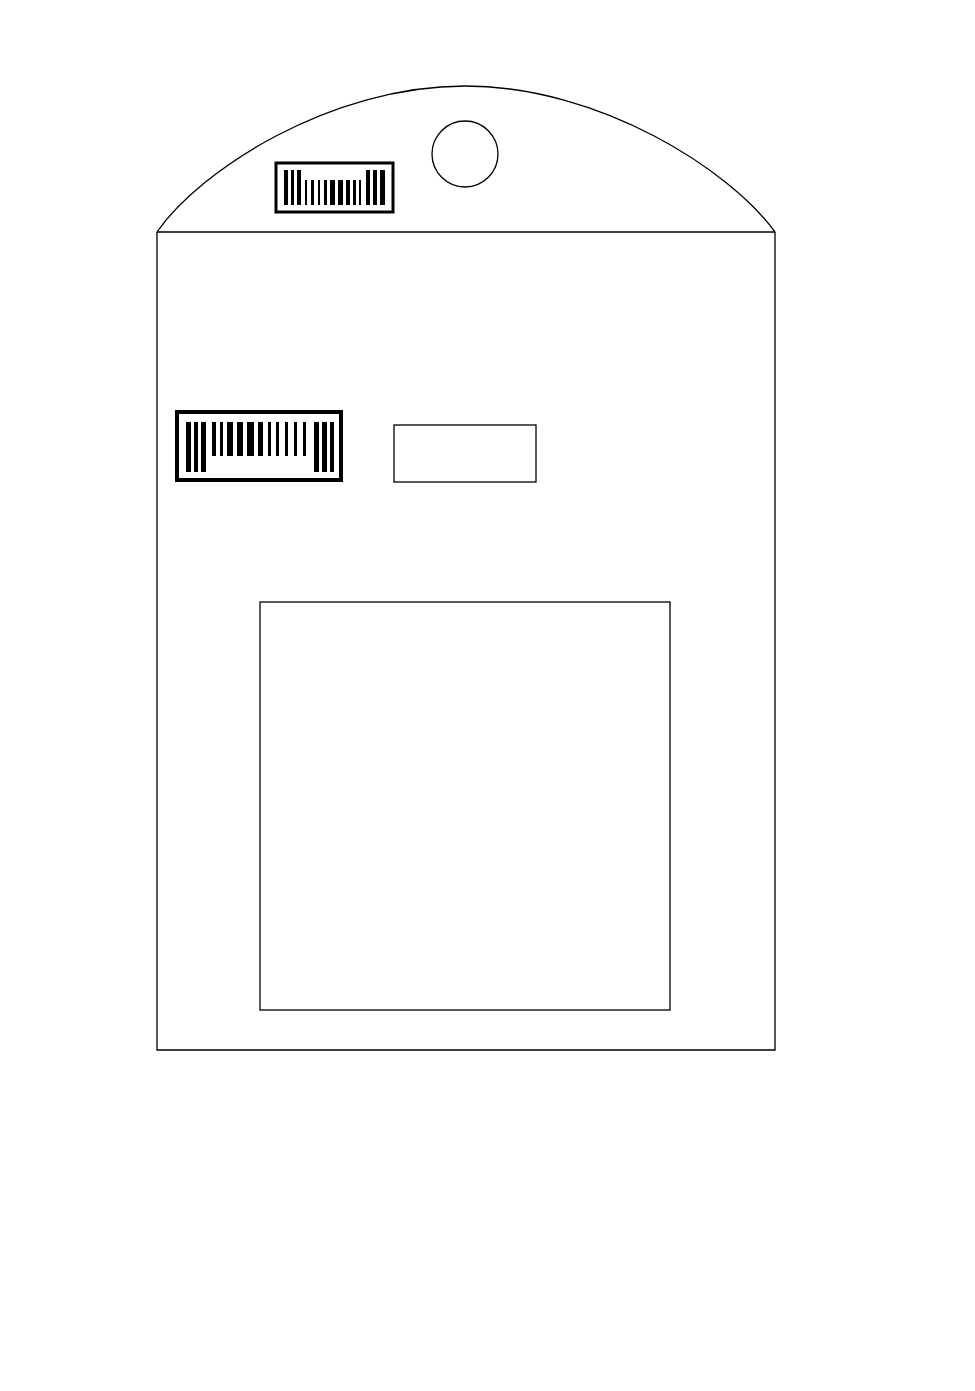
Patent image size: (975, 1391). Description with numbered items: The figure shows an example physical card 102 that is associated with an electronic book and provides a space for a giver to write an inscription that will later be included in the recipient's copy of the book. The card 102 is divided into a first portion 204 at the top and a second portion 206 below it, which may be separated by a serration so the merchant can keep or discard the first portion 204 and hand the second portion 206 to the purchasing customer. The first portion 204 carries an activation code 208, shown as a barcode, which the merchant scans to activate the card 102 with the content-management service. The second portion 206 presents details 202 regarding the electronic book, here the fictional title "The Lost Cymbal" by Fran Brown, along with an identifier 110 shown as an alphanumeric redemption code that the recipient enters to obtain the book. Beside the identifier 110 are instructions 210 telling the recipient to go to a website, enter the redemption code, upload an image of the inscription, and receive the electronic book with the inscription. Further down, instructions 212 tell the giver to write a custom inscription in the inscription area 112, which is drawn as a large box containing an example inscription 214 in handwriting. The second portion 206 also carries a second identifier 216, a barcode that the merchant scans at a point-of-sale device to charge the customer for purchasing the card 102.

The physical card 102 is at (454, 668).
The first portion 204 is at (366, 92).
The details 202 is at (647, 227).
The second portion 206 is at (147, 293).
The activation code 208 is at (260, 158).
The second identifier 216 is at (166, 439).
The identifier 110 is at (395, 425).
The instructions 210 is at (761, 339).
The instructions 212 is at (260, 541).
The inscription area 112 is at (252, 705).
The example inscription 214 is at (652, 741).